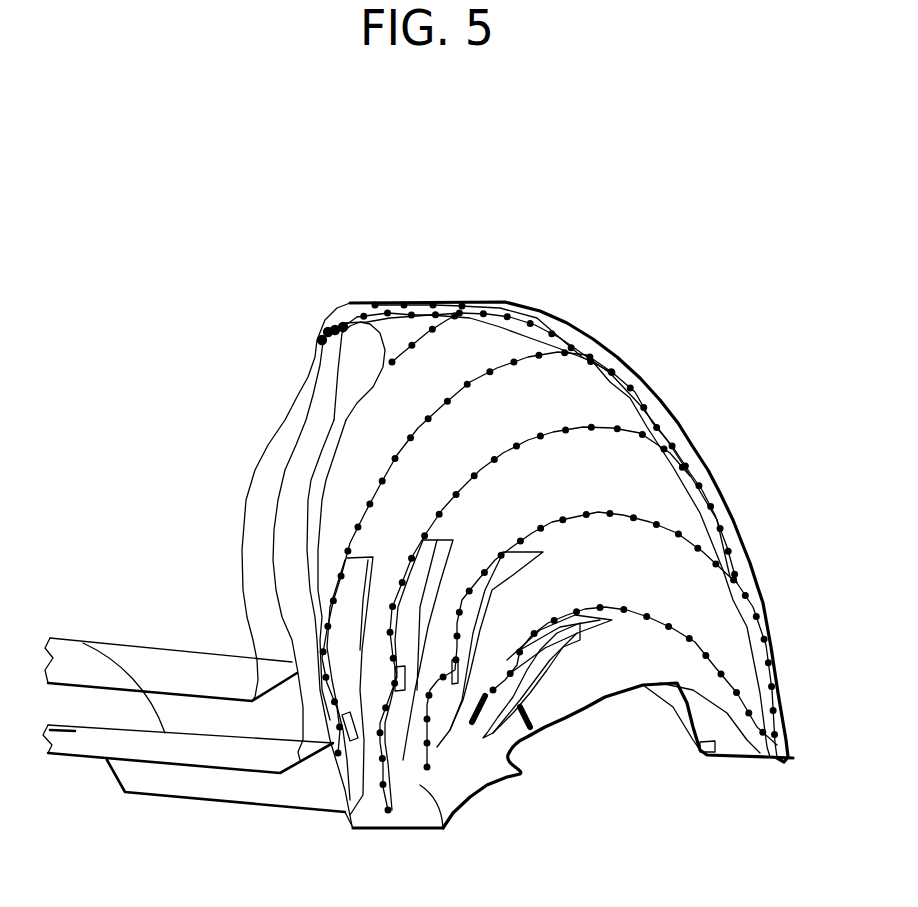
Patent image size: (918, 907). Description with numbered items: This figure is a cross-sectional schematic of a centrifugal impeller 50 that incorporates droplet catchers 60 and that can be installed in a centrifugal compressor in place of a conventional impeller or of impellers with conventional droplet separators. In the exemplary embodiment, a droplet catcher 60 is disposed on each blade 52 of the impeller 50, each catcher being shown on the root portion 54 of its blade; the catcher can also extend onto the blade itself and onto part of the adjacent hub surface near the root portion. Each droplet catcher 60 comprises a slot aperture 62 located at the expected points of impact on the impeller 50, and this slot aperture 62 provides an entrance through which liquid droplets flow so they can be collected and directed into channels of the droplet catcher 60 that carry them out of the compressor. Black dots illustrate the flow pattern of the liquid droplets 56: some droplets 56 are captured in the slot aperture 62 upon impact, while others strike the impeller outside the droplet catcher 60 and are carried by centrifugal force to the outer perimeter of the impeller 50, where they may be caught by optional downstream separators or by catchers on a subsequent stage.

The centrifugal impeller 50 is at (305, 395).
The blade 52 is at (443, 537).
The root portion 54 is at (432, 830).
The liquid droplets 56 is at (654, 528).
The droplet catcher 60 is at (347, 813).
The slot aperture 62 is at (513, 690).